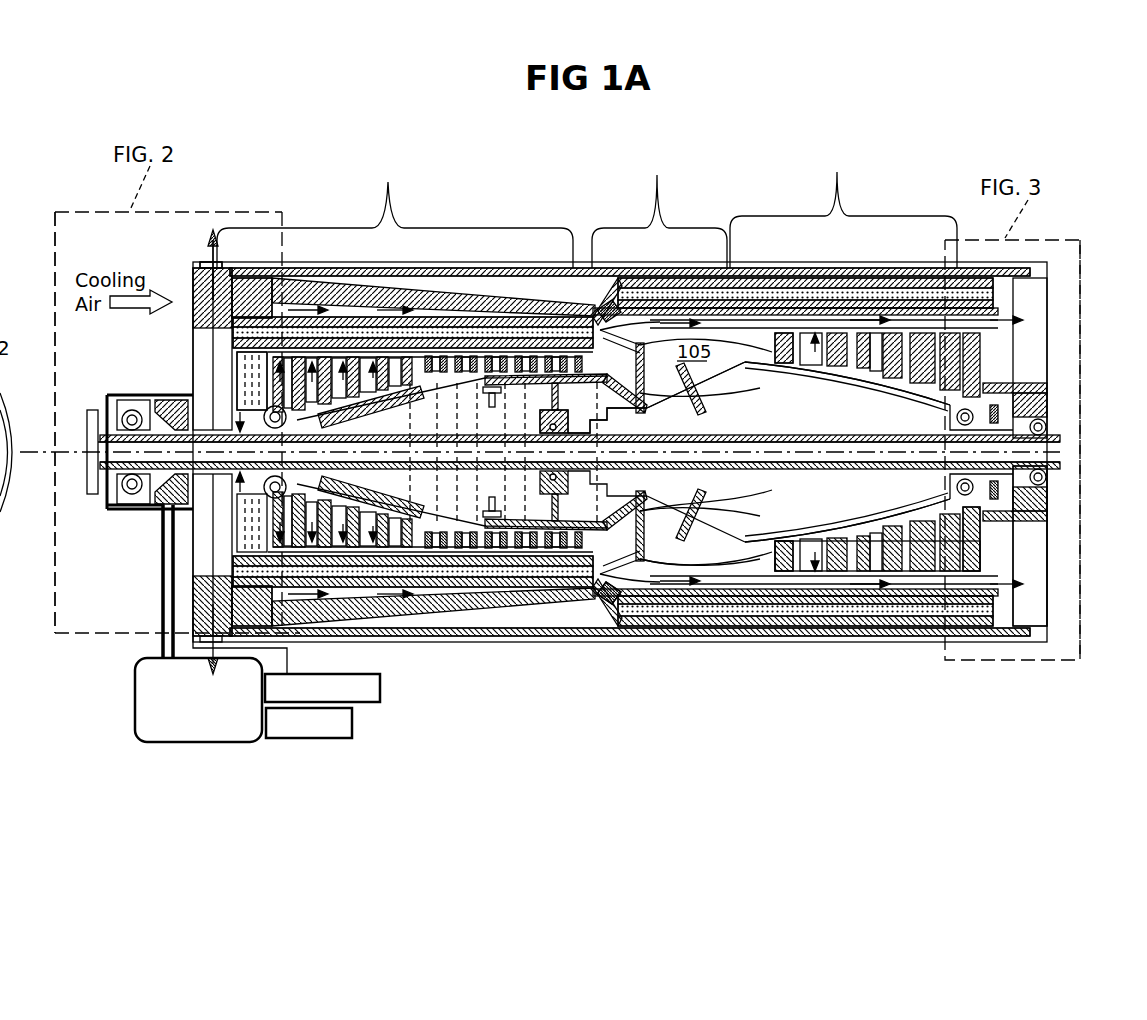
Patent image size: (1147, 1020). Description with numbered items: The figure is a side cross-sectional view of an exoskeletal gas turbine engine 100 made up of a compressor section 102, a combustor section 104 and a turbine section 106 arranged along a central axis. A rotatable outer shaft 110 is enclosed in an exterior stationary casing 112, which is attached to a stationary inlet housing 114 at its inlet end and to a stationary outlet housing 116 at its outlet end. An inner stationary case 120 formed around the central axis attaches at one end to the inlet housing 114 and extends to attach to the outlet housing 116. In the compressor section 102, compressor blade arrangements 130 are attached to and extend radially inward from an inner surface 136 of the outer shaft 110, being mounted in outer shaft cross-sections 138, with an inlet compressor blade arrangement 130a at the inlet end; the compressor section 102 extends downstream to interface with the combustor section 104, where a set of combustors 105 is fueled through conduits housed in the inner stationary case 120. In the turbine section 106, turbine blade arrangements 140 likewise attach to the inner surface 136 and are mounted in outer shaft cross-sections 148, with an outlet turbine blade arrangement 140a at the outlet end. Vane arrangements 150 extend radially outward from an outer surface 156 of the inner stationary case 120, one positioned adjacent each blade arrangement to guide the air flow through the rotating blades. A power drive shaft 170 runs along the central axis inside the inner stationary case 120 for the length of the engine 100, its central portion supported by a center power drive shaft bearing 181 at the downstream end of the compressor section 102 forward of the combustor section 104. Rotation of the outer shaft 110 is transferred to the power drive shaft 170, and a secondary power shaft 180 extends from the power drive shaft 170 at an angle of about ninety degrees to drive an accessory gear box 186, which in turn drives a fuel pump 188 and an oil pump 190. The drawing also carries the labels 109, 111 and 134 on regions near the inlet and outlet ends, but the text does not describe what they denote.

The gas turbine engine 100 is at (222, 142).
The compressor section 102 is at (395, 207).
The combustor section 104 is at (659, 207).
The combustors 105 is at (697, 555).
The turbine section 106 is at (843, 205).
The forward accessory section 109 is at (60, 648).
The outer shaft 110 is at (697, 268).
The aft exhaust section 111 is at (1050, 668).
The casing 112 is at (583, 268).
The inlet housing 114 is at (192, 247).
The outlet housing 116 is at (1027, 650).
The inner stationary case 120 is at (760, 527).
The compressor blade arrangements 130 is at (540, 268).
The inlet compressor blade arrangement 130a is at (275, 375).
The front frame 134 is at (250, 270).
The inner surface 136 is at (780, 345).
The outer shaft cross-sections 138 is at (596, 625).
The turbine blade arrangements 140 is at (875, 572).
The outlet turbine blade arrangement 140a is at (985, 556).
The outer shaft cross-sections 148 is at (937, 424).
The vane arrangements 150 is at (532, 548).
The outer surface 156 is at (740, 390).
The power drive shaft 170 is at (712, 434).
The secondary power shaft 180 is at (165, 582).
The center power drive shaft bearing 181 is at (568, 427).
The accessory gear box 186 is at (163, 745).
The fuel pump 188 is at (366, 703).
The oil pump 190 is at (305, 740).